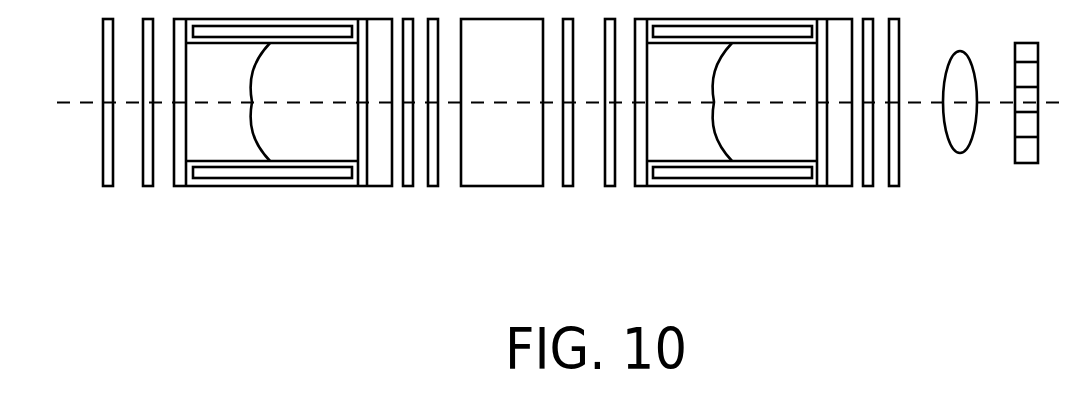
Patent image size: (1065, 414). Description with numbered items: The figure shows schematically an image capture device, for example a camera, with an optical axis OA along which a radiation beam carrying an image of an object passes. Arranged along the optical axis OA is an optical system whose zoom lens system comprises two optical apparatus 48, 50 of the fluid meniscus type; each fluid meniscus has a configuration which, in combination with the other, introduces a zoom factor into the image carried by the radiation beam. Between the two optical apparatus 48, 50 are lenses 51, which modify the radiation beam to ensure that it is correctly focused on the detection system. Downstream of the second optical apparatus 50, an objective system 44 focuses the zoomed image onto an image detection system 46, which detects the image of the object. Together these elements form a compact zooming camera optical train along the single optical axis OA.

The optical axis OA is at (62, 103).
The optical apparatus 48 is at (103, 212).
The optical apparatus 50 is at (563, 212).
The lenses 51 is at (502, 186).
The objective system 44 is at (960, 153).
The image detection system 46 is at (1026, 163).